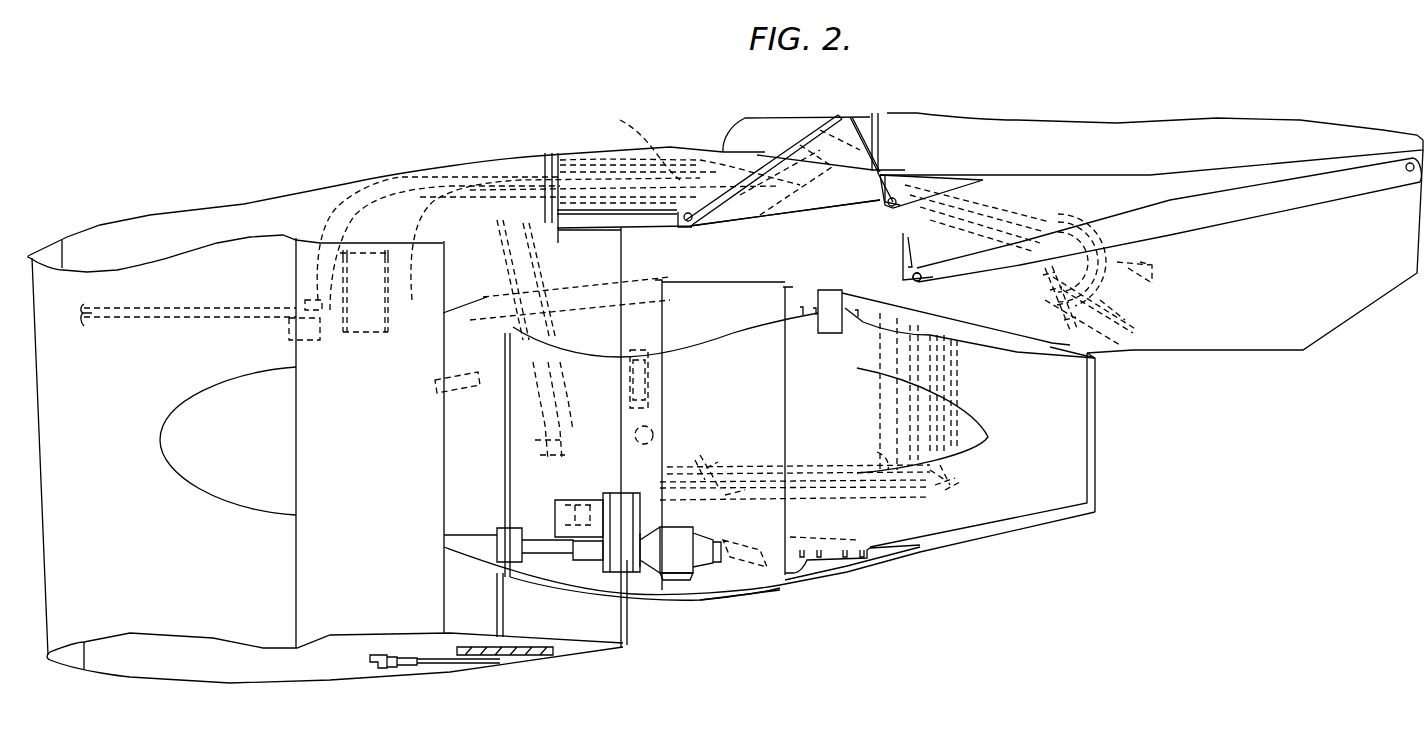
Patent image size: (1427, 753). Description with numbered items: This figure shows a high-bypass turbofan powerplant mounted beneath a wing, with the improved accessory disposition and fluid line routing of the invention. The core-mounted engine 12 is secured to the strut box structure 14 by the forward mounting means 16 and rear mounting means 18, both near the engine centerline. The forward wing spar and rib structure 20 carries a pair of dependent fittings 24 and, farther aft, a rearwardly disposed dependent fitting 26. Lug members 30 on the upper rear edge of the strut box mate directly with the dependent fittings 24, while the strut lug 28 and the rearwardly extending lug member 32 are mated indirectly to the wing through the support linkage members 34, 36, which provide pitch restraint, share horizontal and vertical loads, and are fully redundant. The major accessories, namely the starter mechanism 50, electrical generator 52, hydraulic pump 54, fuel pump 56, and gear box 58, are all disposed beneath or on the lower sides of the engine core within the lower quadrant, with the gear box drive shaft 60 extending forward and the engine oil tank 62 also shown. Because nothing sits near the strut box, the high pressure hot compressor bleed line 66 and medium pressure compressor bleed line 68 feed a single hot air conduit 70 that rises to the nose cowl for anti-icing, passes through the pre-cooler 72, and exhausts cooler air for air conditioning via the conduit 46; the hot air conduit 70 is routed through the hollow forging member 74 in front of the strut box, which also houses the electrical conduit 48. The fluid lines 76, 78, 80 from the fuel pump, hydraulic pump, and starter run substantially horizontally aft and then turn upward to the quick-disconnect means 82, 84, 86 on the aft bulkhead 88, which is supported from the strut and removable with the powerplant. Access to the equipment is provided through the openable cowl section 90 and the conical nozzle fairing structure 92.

The core-mounted engine 12 is at (740, 329).
The strut box structure 14 is at (785, 228).
The forward mounting means 16 is at (480, 386).
The rear mounting means 18 is at (833, 333).
The forward wing spar and rib structure 20 is at (880, 128).
The dependent fitting 24 is at (957, 178).
The rearwardly disposed dependent fitting 26 is at (1417, 183).
The strut lug 28 is at (723, 215).
The lug member 30 is at (888, 212).
The rearwardly extending lug member 32 is at (903, 267).
The support linkage member 34 is at (800, 128).
The support linkage member 36 is at (1293, 203).
The conduit 46 is at (680, 180).
The electrical conduit 48 is at (772, 191).
The starter mechanism 50 is at (673, 575).
The electrical generator 52 is at (703, 550).
The hydraulic pump 54 is at (700, 457).
The fuel pump 56 is at (572, 530).
The gear box 58 is at (630, 562).
The gear box drive shaft 60 is at (537, 550).
The engine oil tank 62 is at (665, 437).
The high pressure hot compressor bleed line 66 is at (663, 390).
The medium pressure compressor bleed line 68 is at (558, 411).
The hot air conduit 70 is at (556, 303).
The pre-cooler 72 is at (360, 346).
The hollow forging member 74 is at (485, 290).
The fluid line 76 is at (895, 398).
The fluid line 78 is at (956, 476).
The fluid line 80 is at (877, 452).
The quick-disconnect means 82 is at (1135, 268).
The quick-disconnect means 84 is at (1130, 328).
The quick-disconnect means 86 is at (1060, 258).
The aft bulkhead 88 is at (1113, 348).
The openable cowl section 90 is at (770, 578).
The conical nozzle fairing structure 92 is at (937, 547).